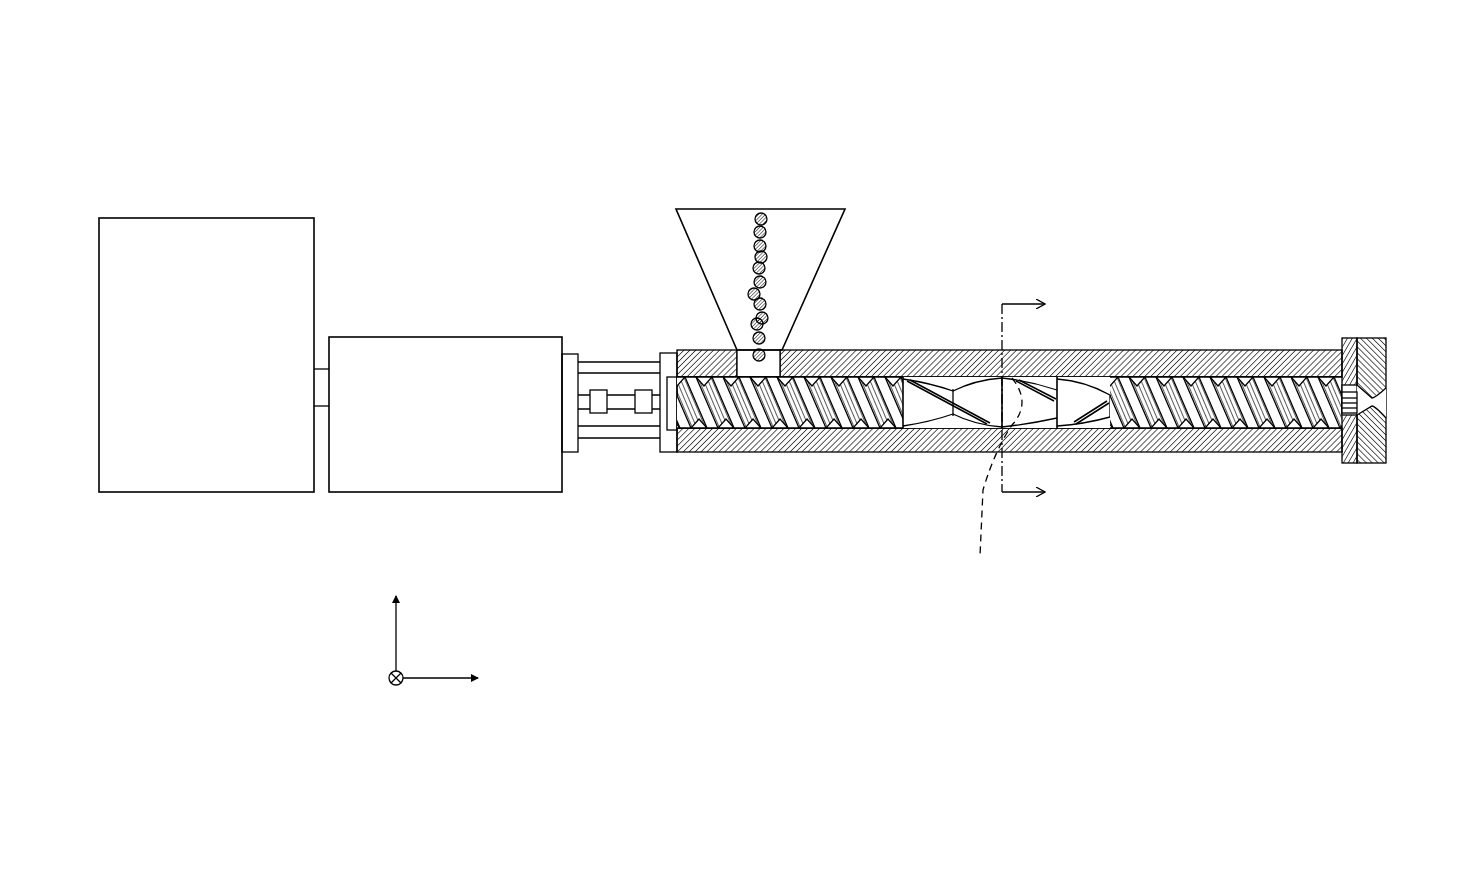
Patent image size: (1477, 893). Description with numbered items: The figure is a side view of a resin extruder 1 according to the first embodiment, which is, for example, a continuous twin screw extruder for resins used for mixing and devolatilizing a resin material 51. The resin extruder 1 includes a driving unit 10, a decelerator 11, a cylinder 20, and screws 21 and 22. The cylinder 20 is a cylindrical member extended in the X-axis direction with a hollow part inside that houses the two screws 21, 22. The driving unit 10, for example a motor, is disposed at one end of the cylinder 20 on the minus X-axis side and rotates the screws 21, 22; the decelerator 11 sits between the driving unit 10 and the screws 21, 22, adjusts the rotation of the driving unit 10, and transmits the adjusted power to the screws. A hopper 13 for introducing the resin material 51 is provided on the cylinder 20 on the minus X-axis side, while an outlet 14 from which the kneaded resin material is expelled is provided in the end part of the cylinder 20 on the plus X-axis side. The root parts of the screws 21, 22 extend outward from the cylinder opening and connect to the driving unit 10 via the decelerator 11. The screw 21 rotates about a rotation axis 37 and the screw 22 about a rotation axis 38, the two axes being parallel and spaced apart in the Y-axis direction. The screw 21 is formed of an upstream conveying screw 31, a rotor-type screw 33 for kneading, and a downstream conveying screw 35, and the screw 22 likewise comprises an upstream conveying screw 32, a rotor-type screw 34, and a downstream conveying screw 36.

The resin extruder 1 is at (396, 79).
The driving unit 10 is at (195, 225).
The decelerator 11 is at (445, 347).
The hopper 13 is at (800, 209).
The outlet 14 is at (1385, 400).
The cylinder 20 is at (1009, 362).
The screw 21 is at (1009, 362).
The screw 22 is at (1107, 350).
The upstream conveying screw 31 is at (790, 457).
The upstream conveying screw 32 is at (782, 402).
The rotor-type screw 33 is at (1028, 457).
The rotor-type screw 34 is at (1073, 402).
The downstream conveying screw 35 is at (1223, 457).
The downstream conveying screw 36 is at (1180, 403).
The rotation axis 37 is at (638, 463).
The rotation axis 38 is at (623, 402).
The resin material 51 is at (755, 290).